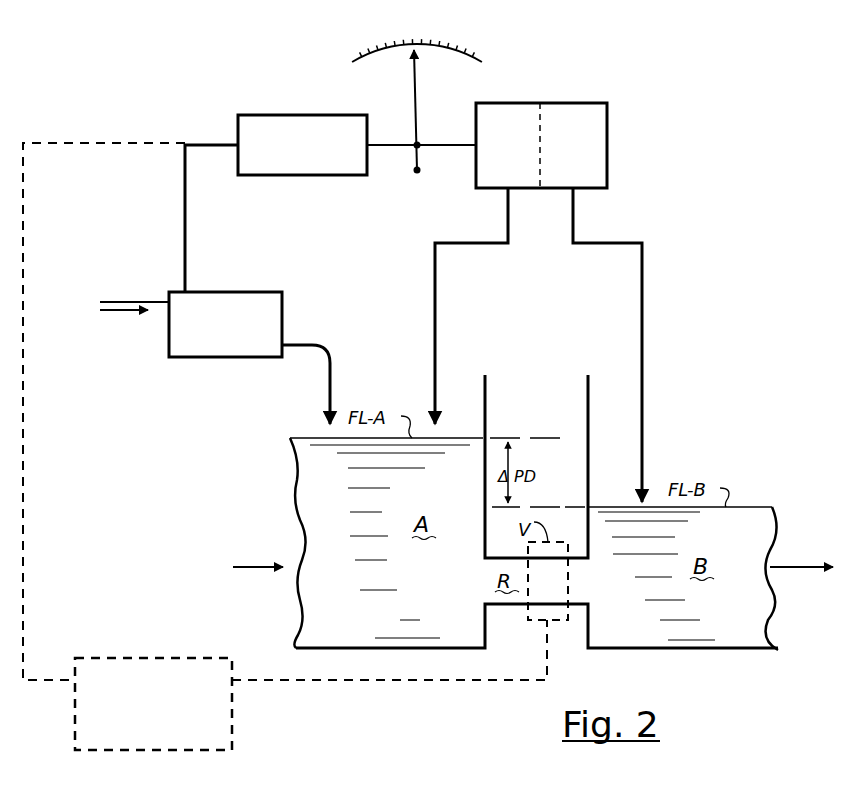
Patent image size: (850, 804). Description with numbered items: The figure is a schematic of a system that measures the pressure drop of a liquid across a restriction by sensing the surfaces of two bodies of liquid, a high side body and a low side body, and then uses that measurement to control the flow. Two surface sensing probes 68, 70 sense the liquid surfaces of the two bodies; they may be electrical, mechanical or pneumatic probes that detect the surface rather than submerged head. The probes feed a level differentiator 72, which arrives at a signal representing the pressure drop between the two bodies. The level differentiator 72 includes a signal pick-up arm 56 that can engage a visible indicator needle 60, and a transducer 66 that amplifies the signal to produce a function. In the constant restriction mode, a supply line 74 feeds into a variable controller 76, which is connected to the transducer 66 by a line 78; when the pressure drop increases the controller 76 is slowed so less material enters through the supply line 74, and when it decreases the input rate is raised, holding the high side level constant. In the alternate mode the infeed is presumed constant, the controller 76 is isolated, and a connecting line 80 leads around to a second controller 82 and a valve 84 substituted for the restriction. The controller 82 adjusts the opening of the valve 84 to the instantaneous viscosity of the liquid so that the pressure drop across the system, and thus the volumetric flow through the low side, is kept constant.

The signal pick-up arm 56 is at (401, 124).
The visible indicator needle 60 is at (416, 104).
The transducer 66 is at (303, 115).
The surface sensing probe 68 is at (437, 335).
The surface sensing probe 70 is at (640, 335).
The level differentiator 72 is at (609, 102).
The supply line 74 is at (135, 302).
The variable controller 76 is at (283, 292).
The line 78 is at (186, 226).
The connecting line 80 is at (28, 232).
The controller 82 is at (76, 658).
The valve 84 is at (532, 626).